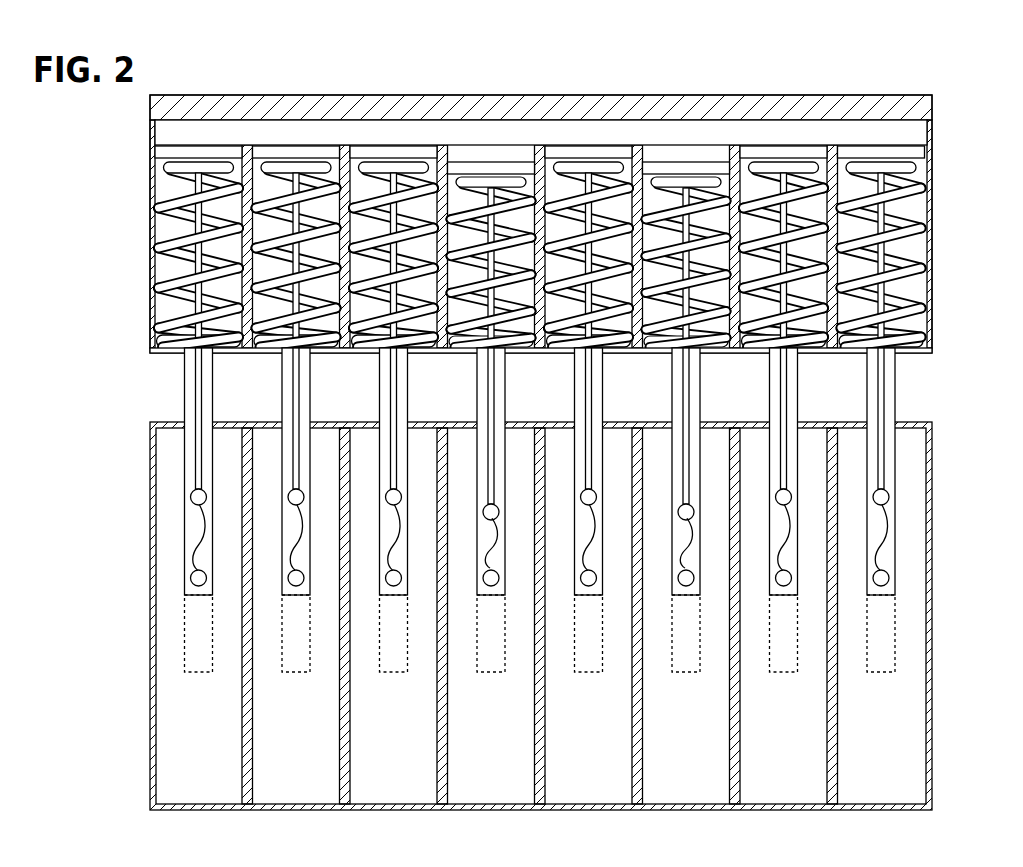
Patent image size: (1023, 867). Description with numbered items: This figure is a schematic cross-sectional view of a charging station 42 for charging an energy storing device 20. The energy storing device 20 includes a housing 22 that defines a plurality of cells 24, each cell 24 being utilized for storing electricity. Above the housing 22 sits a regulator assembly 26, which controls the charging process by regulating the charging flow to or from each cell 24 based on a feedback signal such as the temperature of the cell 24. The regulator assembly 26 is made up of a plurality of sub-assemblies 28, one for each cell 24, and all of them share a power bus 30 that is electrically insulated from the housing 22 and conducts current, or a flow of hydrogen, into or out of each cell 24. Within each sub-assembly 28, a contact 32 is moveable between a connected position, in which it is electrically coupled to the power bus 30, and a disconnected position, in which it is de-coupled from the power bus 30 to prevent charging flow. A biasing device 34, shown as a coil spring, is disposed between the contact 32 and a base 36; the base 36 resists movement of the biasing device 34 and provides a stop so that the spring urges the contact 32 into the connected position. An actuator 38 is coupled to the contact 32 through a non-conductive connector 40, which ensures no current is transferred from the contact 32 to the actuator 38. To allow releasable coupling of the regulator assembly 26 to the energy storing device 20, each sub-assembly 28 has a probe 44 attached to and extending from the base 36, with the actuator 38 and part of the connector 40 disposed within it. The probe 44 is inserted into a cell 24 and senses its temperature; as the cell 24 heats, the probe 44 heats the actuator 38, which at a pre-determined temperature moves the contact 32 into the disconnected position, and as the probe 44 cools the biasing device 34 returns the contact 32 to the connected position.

The energy storing device 20 is at (937, 610).
The housing 22 is at (935, 487).
The cell 24 is at (479, 774).
The regulator assembly 26 is at (938, 187).
The sub-assembly 28 is at (574, 208).
The power bus 30 is at (655, 130).
The contact 32 is at (365, 153).
The biasing device 34 is at (262, 195).
The base 36 is at (376, 353).
The actuator 38 is at (397, 556).
The connector 40 is at (204, 441).
The charging station 42 is at (858, 94).
The probe 44 is at (204, 598).